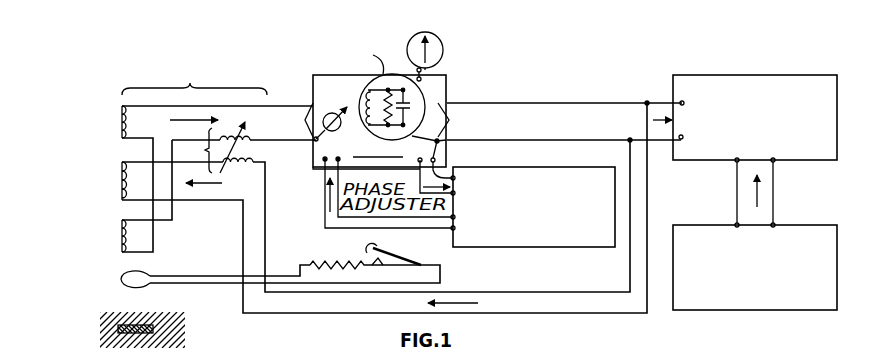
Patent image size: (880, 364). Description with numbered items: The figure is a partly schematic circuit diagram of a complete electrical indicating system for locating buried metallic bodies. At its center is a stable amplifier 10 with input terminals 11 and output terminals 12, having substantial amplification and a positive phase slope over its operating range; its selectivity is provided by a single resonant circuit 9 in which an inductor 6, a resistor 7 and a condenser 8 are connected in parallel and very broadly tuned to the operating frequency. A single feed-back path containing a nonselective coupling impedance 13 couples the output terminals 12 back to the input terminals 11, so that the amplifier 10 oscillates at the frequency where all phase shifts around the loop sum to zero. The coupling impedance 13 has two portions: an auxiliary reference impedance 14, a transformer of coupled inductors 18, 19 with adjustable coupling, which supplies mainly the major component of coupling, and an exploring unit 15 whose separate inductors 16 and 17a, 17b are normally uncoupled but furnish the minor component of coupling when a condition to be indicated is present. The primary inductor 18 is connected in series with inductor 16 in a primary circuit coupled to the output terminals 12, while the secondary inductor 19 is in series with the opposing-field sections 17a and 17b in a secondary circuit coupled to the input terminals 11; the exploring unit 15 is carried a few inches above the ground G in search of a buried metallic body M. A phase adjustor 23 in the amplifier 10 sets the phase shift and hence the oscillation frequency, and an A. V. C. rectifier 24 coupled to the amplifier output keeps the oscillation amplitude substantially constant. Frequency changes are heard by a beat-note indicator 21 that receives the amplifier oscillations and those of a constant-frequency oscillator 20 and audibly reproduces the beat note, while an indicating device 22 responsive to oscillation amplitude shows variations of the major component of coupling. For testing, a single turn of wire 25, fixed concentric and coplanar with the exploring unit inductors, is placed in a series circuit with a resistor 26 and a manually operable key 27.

The inductor 6 is at (356, 96).
The resistor 7 is at (442, 161).
The condenser 8 is at (410, 107).
The single resonant circuit 9 is at (425, 84).
The amplifier 10 is at (469, 179).
The input terminals 11 is at (305, 120).
The output terminals 12 is at (455, 120).
The coupling impedance 13 is at (200, 78).
The auxiliary reference impedance 14 is at (245, 148).
The exploring unit 15 is at (83, 253).
The inductor 16 is at (122, 191).
The inductor section 17a is at (122, 130).
The inductor section 17b is at (122, 247).
The primary inductor 18 is at (225, 166).
The secondary inductor 19 is at (226, 136).
The oscillator 20 is at (837, 240).
The beat-note indicator 21 is at (837, 90).
The indicating device 22 is at (444, 57).
The phase adjustor 23 is at (331, 111).
The A. V. C. rectifier 24 is at (507, 248).
The single turn of wire 25 is at (122, 282).
The resistor 26 is at (343, 262).
The key 27 is at (394, 253).
The ground G is at (160, 312).
The buried metallic body M is at (150, 333).